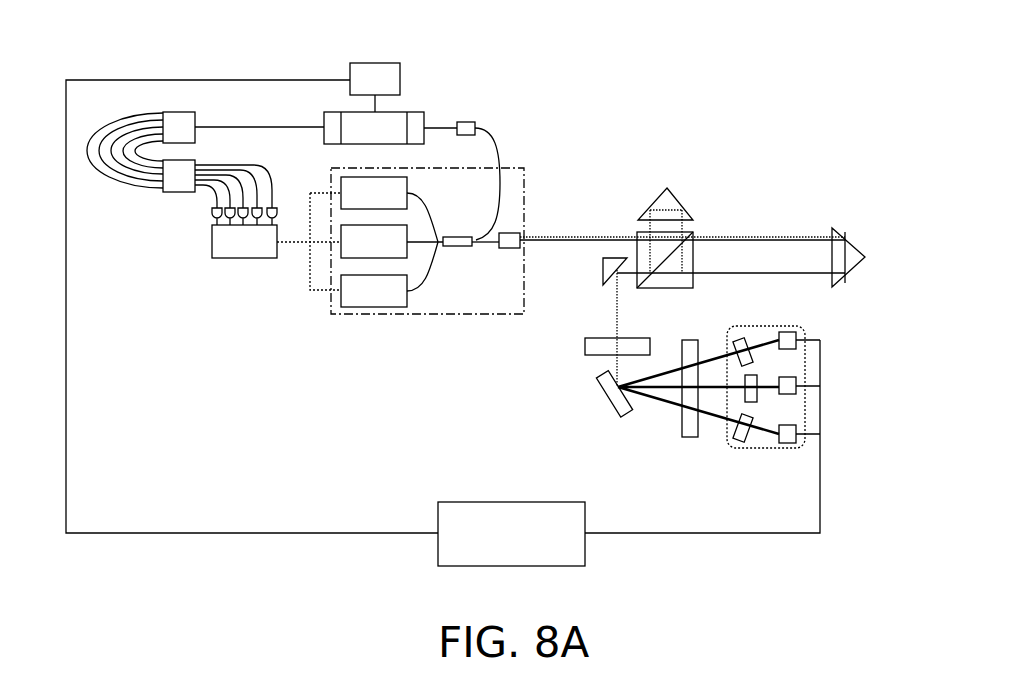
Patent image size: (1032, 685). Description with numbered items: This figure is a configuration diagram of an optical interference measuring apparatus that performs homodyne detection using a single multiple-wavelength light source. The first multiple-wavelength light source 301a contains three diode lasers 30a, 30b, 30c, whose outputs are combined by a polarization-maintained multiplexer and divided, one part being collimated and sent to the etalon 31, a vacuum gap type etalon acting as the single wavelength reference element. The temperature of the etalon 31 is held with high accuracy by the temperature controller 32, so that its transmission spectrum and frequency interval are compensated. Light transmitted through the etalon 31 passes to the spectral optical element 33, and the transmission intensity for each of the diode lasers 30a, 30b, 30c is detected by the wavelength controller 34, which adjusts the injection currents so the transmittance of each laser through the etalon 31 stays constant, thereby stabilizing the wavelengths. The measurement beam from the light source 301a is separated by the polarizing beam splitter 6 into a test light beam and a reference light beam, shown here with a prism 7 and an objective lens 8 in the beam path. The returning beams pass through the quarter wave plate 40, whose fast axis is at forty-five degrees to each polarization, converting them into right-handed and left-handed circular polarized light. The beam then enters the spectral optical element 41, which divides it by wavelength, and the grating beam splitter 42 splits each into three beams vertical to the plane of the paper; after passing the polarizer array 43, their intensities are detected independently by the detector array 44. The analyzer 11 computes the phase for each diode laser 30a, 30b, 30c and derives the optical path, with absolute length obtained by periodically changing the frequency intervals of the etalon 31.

The polarizing beam splitter 6 is at (680, 265).
The prism 7 is at (663, 213).
The objective lens 8 is at (832, 238).
The analyzer 11 is at (505, 553).
The diode laser 30a is at (372, 295).
The diode laser 30b is at (358, 247).
The diode laser 30c is at (363, 195).
The first multiple-wavelength light source 301a is at (487, 305).
The etalon 31 is at (337, 120).
The temperature controller 32 is at (362, 82).
The spectral optical element 33 is at (147, 187).
The wavelength controller 34 is at (228, 238).
The quarter wave plate 40 is at (603, 348).
The spectral optical element 41 is at (620, 398).
The grating beam splitter 42 is at (690, 425).
The polarizer array 43 is at (727, 425).
The detector array 44 is at (806, 395).